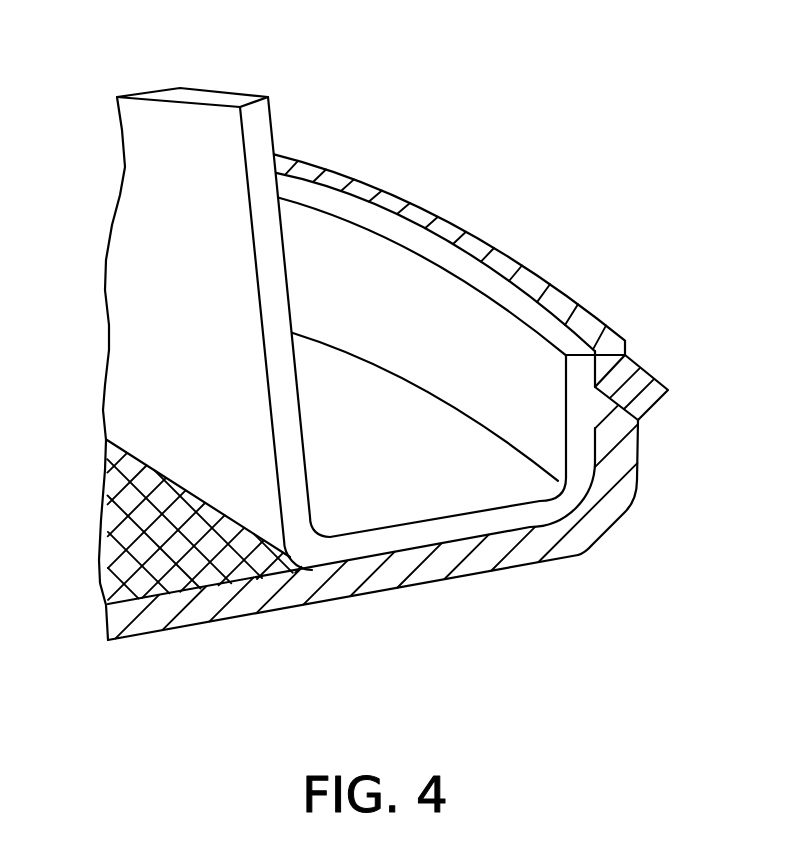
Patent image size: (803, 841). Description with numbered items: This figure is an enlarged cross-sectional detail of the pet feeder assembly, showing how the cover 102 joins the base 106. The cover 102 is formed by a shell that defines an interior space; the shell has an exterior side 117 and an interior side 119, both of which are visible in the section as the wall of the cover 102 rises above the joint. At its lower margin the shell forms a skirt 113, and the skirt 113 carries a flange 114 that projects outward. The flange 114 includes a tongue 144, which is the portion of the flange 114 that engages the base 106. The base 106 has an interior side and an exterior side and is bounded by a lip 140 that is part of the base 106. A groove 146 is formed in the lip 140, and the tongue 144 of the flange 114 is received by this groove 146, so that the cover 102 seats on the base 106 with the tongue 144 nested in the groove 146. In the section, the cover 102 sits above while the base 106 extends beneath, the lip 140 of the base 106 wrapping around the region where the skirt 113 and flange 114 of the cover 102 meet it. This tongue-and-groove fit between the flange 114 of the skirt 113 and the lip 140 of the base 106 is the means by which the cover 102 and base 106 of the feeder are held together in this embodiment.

The cover 102 is at (145, 353).
The base 106 is at (190, 627).
The skirt 113 is at (403, 477).
The flange 114 is at (490, 347).
The exterior side 117 is at (275, 147).
The interior side 119 is at (142, 237).
The lip 140 is at (508, 568).
The tongue 144 is at (597, 402).
The groove 146 is at (618, 403).